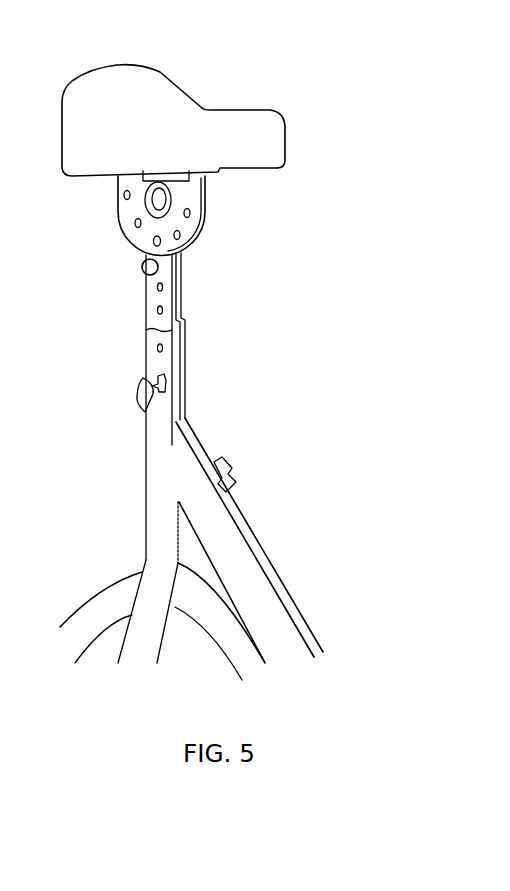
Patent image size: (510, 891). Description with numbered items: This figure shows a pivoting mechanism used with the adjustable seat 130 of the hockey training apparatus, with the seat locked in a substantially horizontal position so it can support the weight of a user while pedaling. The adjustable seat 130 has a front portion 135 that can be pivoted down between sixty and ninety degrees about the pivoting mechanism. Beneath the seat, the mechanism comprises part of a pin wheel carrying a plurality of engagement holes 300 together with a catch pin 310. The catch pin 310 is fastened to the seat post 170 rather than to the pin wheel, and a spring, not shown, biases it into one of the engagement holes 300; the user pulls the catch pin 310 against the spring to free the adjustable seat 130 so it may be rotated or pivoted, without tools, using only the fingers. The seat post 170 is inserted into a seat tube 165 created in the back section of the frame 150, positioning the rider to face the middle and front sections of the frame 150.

The adjustable seat 130 is at (125, 83).
The front portion of the adjustable seat 135 is at (272, 123).
The engagement holes 300 is at (189, 188).
The catch pin 310 is at (158, 268).
The seat post 170 is at (151, 303).
The seat tube 165 is at (149, 361).
The frame 150 is at (257, 595).